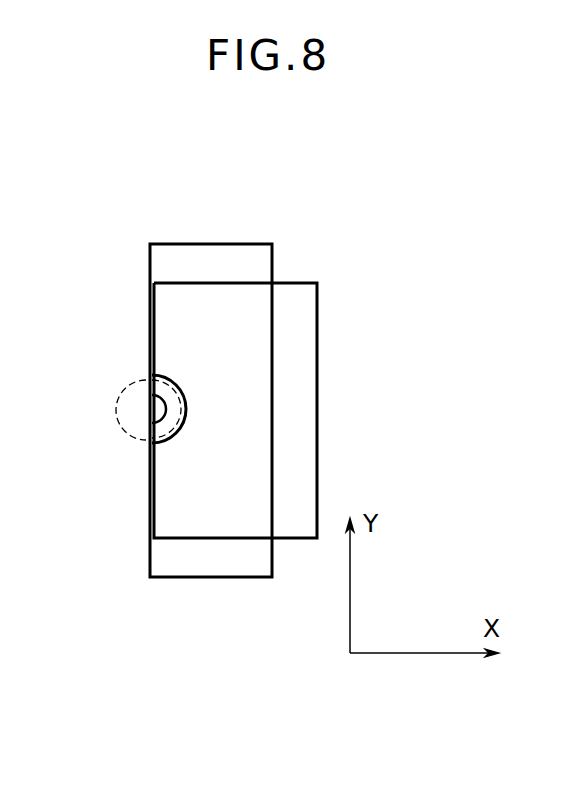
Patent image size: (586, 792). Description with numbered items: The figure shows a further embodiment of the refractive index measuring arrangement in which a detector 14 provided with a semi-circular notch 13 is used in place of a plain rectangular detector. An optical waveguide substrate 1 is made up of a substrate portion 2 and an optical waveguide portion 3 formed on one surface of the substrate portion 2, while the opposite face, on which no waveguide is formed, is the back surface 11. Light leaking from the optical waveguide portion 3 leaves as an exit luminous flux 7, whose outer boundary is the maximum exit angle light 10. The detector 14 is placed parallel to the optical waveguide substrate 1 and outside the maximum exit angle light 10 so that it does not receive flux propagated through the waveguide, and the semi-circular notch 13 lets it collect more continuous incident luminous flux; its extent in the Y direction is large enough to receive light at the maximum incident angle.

The optical waveguide substrate 1 is at (279, 231).
The substrate portion 2 is at (196, 249).
The optical waveguide portion 3 is at (147, 397).
The exit luminous flux 7 is at (127, 397).
The maximum exit angle light 10 is at (118, 422).
The back surface 11 is at (260, 578).
The semi-circular notch 13 is at (162, 447).
The detector 14 is at (303, 363).